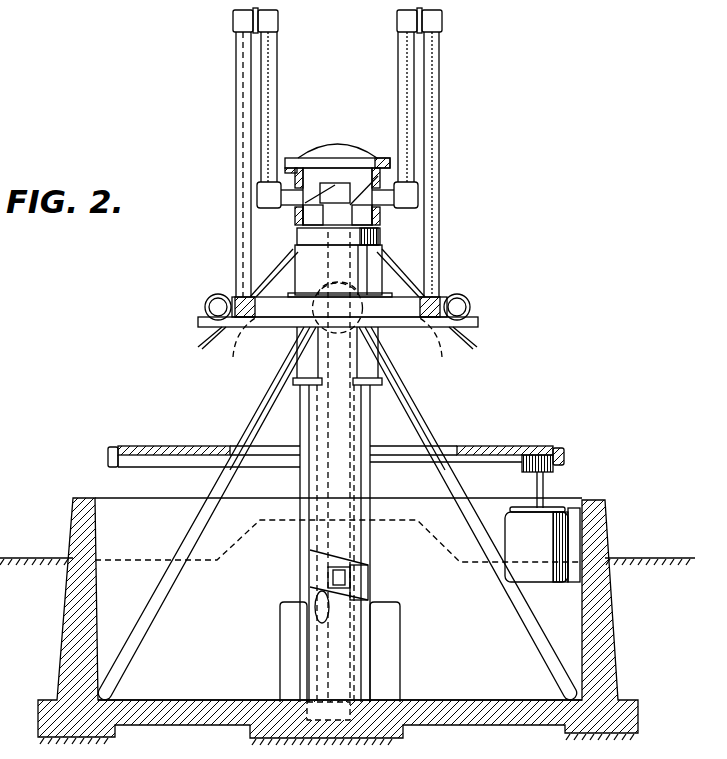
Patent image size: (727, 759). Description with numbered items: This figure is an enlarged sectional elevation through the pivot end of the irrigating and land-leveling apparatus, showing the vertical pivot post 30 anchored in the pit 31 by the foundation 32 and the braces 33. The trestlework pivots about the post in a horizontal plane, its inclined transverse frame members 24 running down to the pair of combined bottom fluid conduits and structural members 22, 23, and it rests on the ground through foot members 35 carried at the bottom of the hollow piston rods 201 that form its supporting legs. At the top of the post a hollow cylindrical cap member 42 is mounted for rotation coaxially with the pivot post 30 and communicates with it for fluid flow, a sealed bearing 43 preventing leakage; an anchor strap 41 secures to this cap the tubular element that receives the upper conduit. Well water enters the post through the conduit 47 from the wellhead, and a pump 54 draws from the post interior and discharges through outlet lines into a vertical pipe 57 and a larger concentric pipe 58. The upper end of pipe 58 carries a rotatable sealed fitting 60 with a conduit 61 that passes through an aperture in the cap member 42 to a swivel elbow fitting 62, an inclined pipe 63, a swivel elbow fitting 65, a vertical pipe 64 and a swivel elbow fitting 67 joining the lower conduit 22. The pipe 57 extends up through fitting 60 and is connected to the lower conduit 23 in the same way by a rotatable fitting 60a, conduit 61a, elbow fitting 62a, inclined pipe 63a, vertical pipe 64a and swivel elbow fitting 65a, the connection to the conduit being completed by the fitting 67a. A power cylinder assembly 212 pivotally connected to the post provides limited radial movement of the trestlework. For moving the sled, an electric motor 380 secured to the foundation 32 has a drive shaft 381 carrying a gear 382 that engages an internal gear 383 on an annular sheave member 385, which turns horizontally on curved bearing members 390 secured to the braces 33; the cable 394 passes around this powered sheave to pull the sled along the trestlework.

The swivel elbow fitting 65a is at (245, 22).
The swivel elbow fitting 65 is at (417, 22).
The vertical pipe 64a is at (251, 66).
The vertical pipe 64 is at (424, 68).
The inclined pipe 63a is at (261, 133).
The inclined pipe 63 is at (414, 134).
The elbow fitting 62a is at (257, 190).
The swivel elbow fitting 62 is at (418, 192).
The rotatable fitting 60a is at (333, 175).
The conduit 61a is at (313, 186).
The vertical pipe 57 is at (352, 205).
The rotatable fitting 60 is at (306, 212).
The conduit 61 is at (370, 210).
The pipe 58 is at (345, 230).
The hollow cylindrical cap member 42 is at (305, 262).
The anchor strap 41 is at (377, 262).
The inclined transverse frame member 24 is at (268, 280).
The power cylinder assembly 212 is at (360, 308).
The combined bottom fluid conduit and structural member 23 is at (205, 302).
The combined bottom fluid conduit and structural member 22 is at (470, 304).
The sealed bearing 43 is at (290, 320).
The swivel elbow fitting 67 is at (418, 328).
The swivel elbow fitting 67a is at (240, 330).
The brace 33 is at (268, 403).
The vertical pivot post 30 is at (378, 415).
The hollow piston rod 201 is at (302, 408).
The annular sheave member 385 is at (197, 447).
The curved bearing member 390 is at (215, 466).
The internal gear 383 is at (118, 450).
The gear 382 is at (535, 455).
The cable 394 is at (565, 455).
The drive shaft 381 is at (543, 490).
The electric motor 380 is at (568, 535).
The foot member 35 is at (452, 555).
The conduit 47 is at (316, 612).
The pump 54 is at (400, 627).
The pit 31 is at (612, 635).
The foundation 32 is at (618, 675).